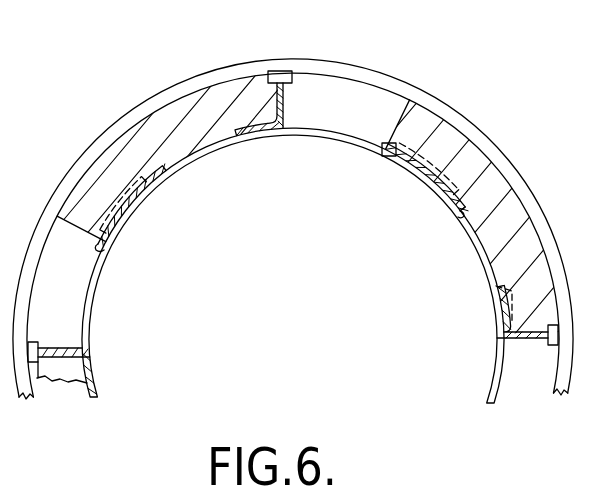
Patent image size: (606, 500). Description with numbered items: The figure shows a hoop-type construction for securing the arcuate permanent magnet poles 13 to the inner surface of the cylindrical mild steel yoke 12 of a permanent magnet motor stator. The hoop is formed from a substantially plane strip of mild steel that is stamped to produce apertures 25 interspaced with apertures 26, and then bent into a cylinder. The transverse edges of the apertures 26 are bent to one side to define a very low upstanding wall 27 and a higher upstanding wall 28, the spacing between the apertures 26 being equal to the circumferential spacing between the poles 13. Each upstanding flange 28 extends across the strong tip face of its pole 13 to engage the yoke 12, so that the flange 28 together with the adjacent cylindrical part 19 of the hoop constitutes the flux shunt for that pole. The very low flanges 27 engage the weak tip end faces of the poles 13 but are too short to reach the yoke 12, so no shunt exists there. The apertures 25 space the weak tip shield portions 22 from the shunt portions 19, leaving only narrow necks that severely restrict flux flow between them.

The yoke 12 is at (360, 73).
The permanent magnet poles 13 is at (188, 123).
The shunt portion 19 is at (254, 137).
The weak tip shield portion 22 is at (137, 208).
The apertures 25 is at (457, 213).
The apertures 26 is at (342, 142).
The very low upstanding wall 27 is at (382, 145).
The higher upstanding wall 28 is at (288, 103).